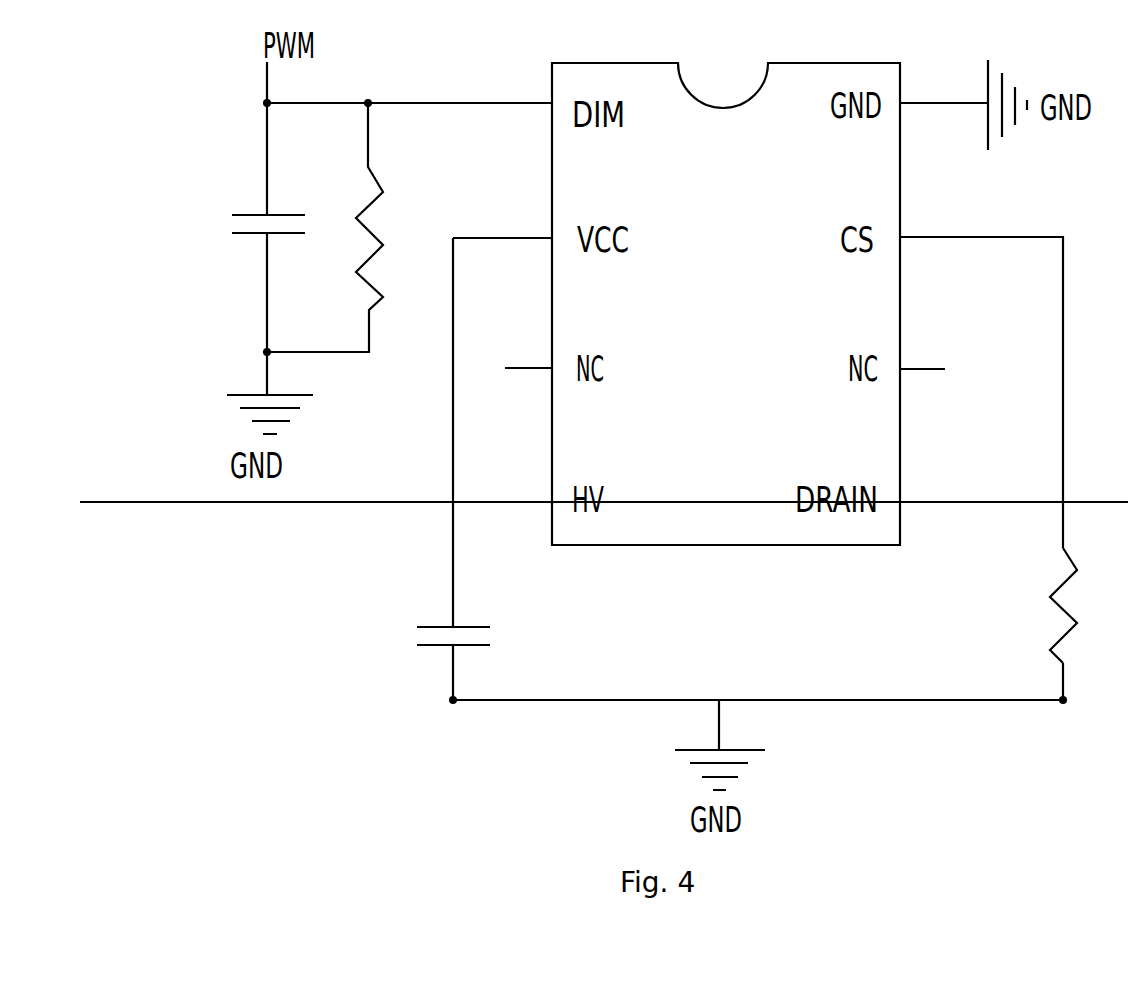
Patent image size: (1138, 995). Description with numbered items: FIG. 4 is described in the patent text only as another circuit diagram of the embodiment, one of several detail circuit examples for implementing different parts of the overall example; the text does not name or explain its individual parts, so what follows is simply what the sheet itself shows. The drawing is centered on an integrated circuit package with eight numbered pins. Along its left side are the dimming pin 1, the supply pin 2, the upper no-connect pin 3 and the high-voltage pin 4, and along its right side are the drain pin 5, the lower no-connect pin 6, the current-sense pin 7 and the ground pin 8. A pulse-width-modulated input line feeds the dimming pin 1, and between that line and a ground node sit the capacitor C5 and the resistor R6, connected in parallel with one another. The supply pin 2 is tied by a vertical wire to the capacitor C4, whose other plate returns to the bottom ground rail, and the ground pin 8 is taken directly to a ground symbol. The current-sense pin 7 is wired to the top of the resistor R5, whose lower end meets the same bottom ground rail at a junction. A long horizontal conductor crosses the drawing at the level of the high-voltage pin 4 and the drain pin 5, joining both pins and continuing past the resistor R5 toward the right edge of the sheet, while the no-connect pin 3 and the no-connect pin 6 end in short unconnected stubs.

The capacitor C5 is at (231, 222).
The resistor R6 is at (348, 227).
The capacitor C4 is at (476, 639).
The resistor R5 is at (1040, 605).
The pin 1 DIM 1 is at (521, 86).
The pin 2 VCC 2 is at (521, 220).
The pin 3 NC 3 is at (521, 352).
The pin 4 HV 4 is at (521, 485).
The pin 5 DRAIN 5 is at (926, 482).
The pin 6 NC 6 is at (926, 350).
The pin 7 CS 7 is at (926, 218).
The pin 8 GND 8 is at (926, 85).